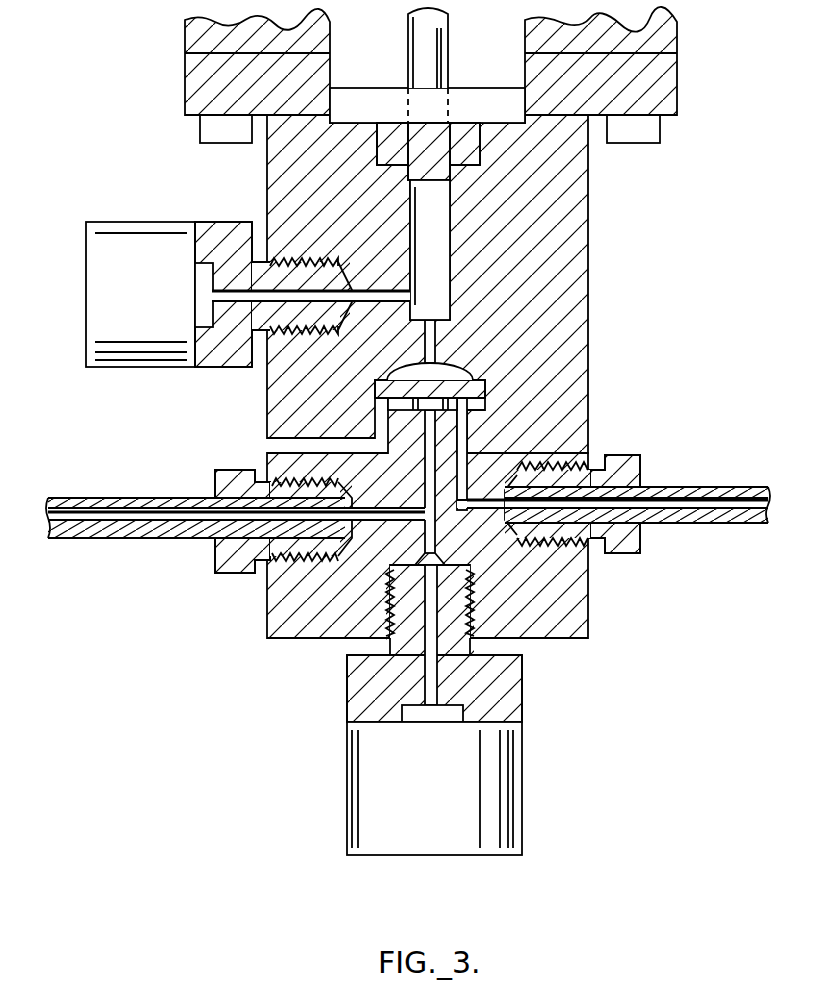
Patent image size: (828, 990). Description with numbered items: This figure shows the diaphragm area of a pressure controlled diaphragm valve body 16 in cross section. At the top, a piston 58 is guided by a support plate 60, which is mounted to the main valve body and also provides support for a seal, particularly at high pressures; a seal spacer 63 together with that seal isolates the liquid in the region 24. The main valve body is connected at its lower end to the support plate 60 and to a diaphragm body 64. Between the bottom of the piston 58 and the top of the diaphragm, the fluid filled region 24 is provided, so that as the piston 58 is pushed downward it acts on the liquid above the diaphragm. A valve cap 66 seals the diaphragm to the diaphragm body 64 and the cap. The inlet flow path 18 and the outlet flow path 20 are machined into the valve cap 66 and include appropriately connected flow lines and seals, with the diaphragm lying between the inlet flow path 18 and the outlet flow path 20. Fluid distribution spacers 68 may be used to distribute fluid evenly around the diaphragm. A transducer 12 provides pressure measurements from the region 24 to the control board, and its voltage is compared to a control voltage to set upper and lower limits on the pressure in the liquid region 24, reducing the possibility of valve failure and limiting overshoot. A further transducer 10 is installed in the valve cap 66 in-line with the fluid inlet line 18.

The transducer 10 is at (497, 782).
The transducer 12 is at (128, 222).
The pressure controlled diaphragm valve body 16 is at (705, 265).
The inlet flow path 18 is at (485, 388).
The outlet flow path 20 is at (640, 455).
The fluid filled region 24 is at (445, 271).
The piston 58 is at (449, 42).
The support plate 60 is at (668, 40).
The seal spacer 63 is at (370, 100).
The diaphragm body 64 is at (583, 185).
The valve cap 66 is at (583, 612).
The fluid distribution spacers 68 is at (485, 407).